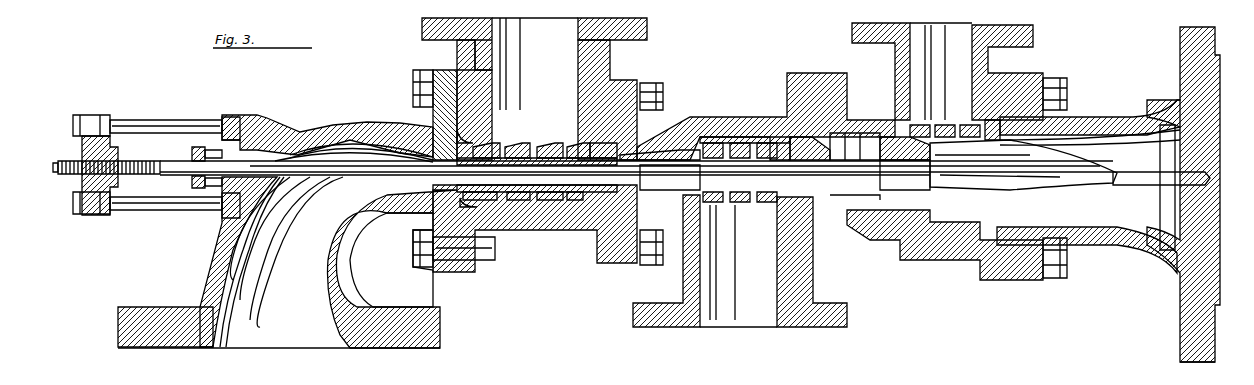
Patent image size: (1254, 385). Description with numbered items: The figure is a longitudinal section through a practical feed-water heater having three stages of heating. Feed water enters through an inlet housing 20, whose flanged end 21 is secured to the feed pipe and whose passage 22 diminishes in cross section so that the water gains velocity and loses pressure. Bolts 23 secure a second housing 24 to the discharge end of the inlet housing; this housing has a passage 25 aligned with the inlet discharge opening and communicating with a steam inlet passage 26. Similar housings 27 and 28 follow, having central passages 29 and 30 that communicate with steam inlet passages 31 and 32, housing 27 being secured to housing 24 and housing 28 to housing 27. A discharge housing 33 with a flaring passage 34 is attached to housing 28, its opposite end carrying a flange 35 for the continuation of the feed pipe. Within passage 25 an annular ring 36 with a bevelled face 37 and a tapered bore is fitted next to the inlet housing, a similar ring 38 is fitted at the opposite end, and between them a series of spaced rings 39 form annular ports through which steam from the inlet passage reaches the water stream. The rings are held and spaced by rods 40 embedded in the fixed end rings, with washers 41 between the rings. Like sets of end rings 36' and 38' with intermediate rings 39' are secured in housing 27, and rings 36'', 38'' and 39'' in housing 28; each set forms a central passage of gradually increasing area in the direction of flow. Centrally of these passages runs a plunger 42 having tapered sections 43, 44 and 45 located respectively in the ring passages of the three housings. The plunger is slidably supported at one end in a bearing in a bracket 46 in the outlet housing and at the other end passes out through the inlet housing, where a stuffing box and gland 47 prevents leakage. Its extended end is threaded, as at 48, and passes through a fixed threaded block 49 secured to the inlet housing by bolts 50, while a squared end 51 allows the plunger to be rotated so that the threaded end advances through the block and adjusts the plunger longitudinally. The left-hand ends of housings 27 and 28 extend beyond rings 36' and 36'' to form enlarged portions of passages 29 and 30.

The inlet housing 20 is at (335, 128).
The flanged end 21 is at (400, 348).
The passage 22 is at (300, 318).
The bolts 23 is at (413, 90).
The second housing 24 is at (597, 80).
The passage 25 is at (548, 205).
The steam inlet passage 26 is at (560, 32).
The housing 27 is at (688, 115).
The housing 28 is at (952, 262).
The central passage 29 is at (660, 148).
The central passage 30 is at (860, 135).
The steam inlet passage 31 is at (740, 328).
The steam inlet passage 32 is at (950, 42).
The discharge housing 33 is at (1135, 112).
The flaring passage 34 is at (1205, 213).
The flange 35 is at (1213, 337).
The annular ring 36 is at (537, 137).
The end ring 36' is at (745, 121).
The end ring 36'' is at (915, 122).
The bevelled face 37 is at (475, 205).
The ring 38 is at (587, 137).
The end ring 38' is at (791, 130).
The end ring 38'' is at (1026, 166).
The spaced rings 39 is at (531, 137).
The intermediate rings 39' is at (740, 189).
The intermediate rings 39'' is at (945, 120).
The rods 40 is at (526, 200).
The washers 41 is at (503, 195).
The plunger 42 is at (350, 182).
The tapered section 43 is at (640, 185).
The tapered section 44 is at (855, 180).
The tapered section 45 is at (1070, 185).
The bracket 46 is at (1170, 165).
The stuffing box and gland 47 is at (192, 180).
The threaded end 48 is at (163, 162).
The threaded block 49 is at (82, 157).
The bolts 50 is at (143, 108).
The squared end 51 is at (57, 174).